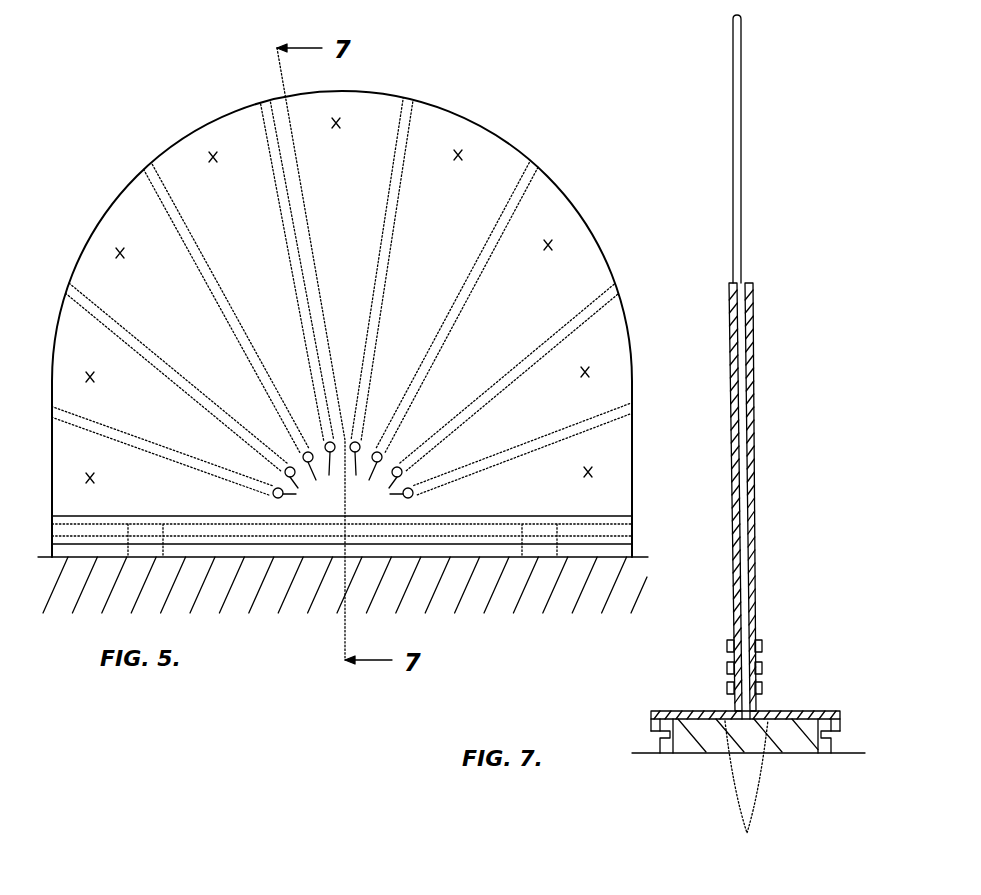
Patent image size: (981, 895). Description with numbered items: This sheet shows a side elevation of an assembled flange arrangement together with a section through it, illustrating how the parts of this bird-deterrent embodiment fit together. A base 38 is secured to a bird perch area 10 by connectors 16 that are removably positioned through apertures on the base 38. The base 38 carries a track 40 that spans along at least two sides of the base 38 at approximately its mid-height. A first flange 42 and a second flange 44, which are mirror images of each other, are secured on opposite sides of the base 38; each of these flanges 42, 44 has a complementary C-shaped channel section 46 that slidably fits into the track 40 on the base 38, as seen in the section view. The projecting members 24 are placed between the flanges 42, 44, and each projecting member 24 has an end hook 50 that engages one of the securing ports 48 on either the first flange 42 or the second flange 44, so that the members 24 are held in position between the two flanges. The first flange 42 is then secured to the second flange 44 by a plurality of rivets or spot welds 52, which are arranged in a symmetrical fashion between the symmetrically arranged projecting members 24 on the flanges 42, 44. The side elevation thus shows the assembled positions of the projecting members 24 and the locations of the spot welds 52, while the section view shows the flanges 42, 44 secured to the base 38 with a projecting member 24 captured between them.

In FIG. 5, the bird perch area 10 is at (633, 553).
In FIG. 7, the connectors 16 is at (736, 771).
In FIG. 5, the projecting members 24 is at (285, 272).
In FIG. 7, the projecting members 24 is at (742, 207).
In FIG. 5, the base 38 is at (62, 555).
In FIG. 7, the base 38 is at (812, 745).
In FIG. 7, the track 40 is at (665, 739).
In FIG. 5, the first flange 42 is at (384, 102).
In FIG. 7, the first flange 42 is at (731, 333).
In FIG. 7, the second flange 44 is at (752, 378).
In FIG. 7, the C-shaped channel section 46 is at (655, 733).
In FIG. 5, the securing ports 48 is at (343, 474).
In FIG. 7, the end hook 50 is at (727, 688).
In FIG. 5, the spot welds 52 is at (217, 162).